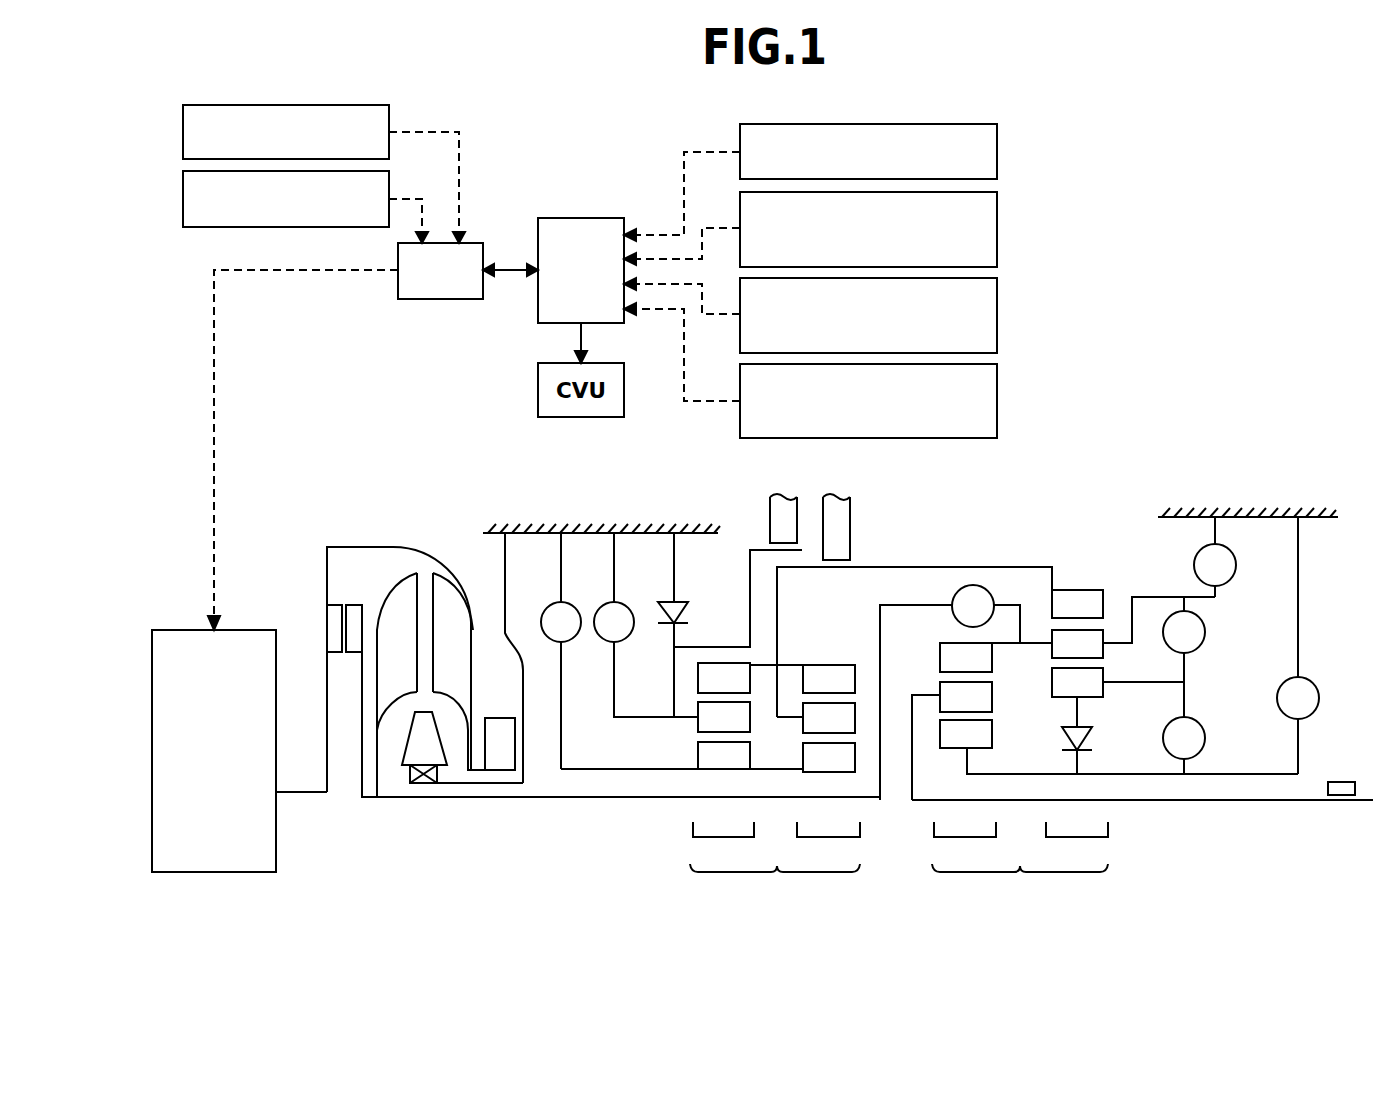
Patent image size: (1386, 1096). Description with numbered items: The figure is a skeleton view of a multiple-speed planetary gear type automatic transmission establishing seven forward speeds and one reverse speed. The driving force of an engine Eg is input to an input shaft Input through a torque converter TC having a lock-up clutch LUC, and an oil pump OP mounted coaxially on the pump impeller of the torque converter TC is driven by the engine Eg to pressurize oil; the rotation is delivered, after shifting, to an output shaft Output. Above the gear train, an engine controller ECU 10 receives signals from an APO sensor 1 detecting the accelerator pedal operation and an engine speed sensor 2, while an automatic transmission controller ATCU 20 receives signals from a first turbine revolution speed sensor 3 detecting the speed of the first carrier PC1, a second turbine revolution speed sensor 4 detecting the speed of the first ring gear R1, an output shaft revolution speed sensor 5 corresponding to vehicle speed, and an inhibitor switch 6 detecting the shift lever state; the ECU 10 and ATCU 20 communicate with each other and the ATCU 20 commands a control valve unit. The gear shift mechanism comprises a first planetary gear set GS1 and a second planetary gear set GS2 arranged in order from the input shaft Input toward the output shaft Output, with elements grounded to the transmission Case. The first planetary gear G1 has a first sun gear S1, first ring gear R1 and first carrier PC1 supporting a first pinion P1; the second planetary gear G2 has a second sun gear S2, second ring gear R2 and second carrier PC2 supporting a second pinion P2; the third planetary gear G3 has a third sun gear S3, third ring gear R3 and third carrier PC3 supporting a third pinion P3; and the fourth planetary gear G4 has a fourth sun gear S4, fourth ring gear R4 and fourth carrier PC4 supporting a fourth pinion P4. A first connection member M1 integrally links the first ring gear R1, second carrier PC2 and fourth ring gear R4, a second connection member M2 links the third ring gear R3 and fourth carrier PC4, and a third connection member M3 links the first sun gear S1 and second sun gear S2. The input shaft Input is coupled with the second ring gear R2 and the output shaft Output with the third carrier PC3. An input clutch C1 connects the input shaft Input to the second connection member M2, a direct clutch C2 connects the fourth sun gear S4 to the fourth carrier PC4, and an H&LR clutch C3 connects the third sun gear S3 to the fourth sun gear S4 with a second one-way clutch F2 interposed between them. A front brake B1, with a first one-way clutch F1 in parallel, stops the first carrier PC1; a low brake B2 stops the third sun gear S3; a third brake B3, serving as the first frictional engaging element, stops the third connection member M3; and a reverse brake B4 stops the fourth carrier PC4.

The APO sensor 1 is at (183, 131).
The engine speed sensor 2 is at (183, 200).
The first turbine revolution speed sensor 3 is at (997, 228).
The second turbine revolution speed sensor 4 is at (997, 314).
The output shaft revolution speed sensor 5 is at (997, 400).
The inhibitor switch 6 is at (997, 152).
The engine controller (ECU) 10 is at (437, 299).
The automatic transmission controller (ATCU) 20 is at (561, 218).
The engine Eg is at (255, 630).
The torque converter TC is at (412, 530).
The lock-up clutch LUC is at (340, 588).
The oil pump OP is at (500, 718).
The transmission case Case is at (574, 534).
The input shaft Input is at (533, 805).
The output shaft Output is at (1223, 820).
The front brake B1 is at (646, 625).
The low brake B2 is at (1298, 645).
The 2346-brake B3 is at (561, 651).
The reverse brake B4 is at (1215, 557).
The input clutch C1 is at (950, 692).
The direct clutch C2 is at (1154, 657).
The H&LR clutch C3 is at (1184, 745).
The first one-way clutch F1 is at (694, 594).
The second one-way clutch F2 is at (1099, 722).
The first planetary gear G1 is at (723, 846).
The second planetary gear G2 is at (828, 846).
The third planetary gear G3 is at (965, 846).
The fourth planetary gear G4 is at (1077, 846).
The first planetary gear set GS1 is at (775, 886).
The second planetary gear set GS2 is at (1020, 886).
The first ring gear R1 is at (724, 678).
The second ring gear R2 is at (829, 679).
The third ring gear R3 is at (966, 657).
The fourth ring gear R4 is at (1077, 604).
The first pinion P1 is at (724, 717).
The second pinion P2 is at (829, 718).
The third pinion P3 is at (966, 697).
The fourth pinion P4 is at (1077, 644).
The first sun gear S1 is at (724, 755).
The second sun gear S2 is at (829, 757).
The third sun gear S3 is at (966, 734).
The fourth sun gear S4 is at (1077, 682).
The first carrier PC1 is at (688, 724).
The second carrier PC2 is at (793, 710).
The third carrier PC3 is at (928, 692).
The fourth carrier PC4 is at (1118, 638).
The first connection member M1 is at (970, 567).
The second connection member M2 is at (1012, 652).
The third connection member M3 is at (760, 770).